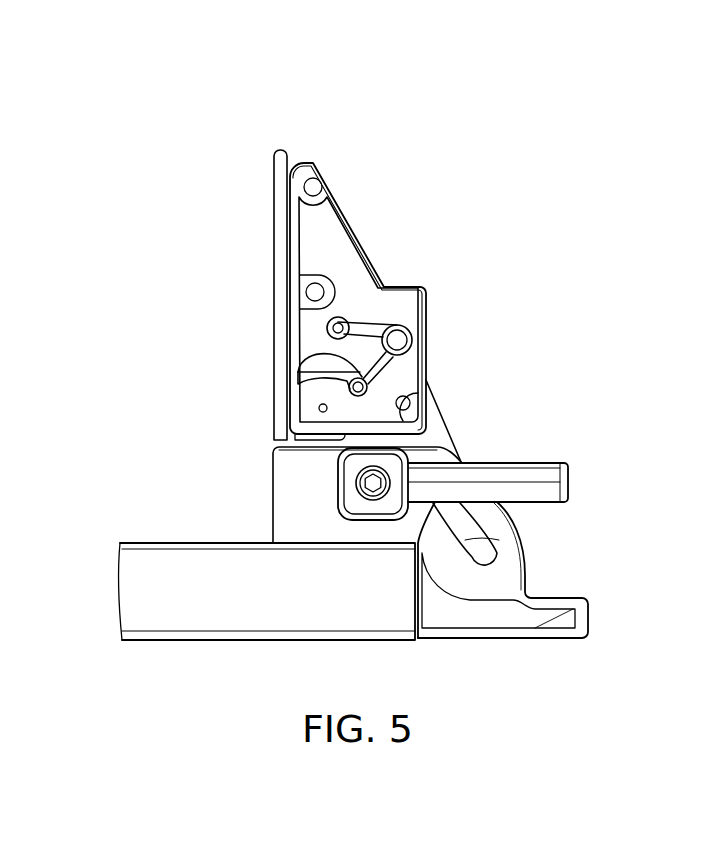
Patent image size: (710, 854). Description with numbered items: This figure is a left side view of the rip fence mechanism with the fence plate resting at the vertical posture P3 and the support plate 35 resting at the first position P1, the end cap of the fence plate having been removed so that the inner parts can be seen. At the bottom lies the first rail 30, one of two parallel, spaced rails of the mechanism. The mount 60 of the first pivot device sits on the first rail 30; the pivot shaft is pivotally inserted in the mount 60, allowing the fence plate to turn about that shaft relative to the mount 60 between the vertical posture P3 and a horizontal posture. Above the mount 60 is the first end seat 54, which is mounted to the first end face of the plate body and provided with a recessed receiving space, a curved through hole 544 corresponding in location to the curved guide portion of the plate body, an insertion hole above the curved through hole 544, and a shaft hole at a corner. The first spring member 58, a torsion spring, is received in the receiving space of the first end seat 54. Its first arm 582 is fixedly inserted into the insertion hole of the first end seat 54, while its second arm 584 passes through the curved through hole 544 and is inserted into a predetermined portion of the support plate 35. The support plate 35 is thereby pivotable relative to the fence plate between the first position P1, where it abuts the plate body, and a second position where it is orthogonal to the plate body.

The first rail 30 is at (187, 620).
The support plate 35 is at (280, 206).
The first end seat 54 is at (348, 222).
The curved through hole 544 is at (305, 352).
The first spring member 58 is at (408, 335).
The first arm 582 is at (340, 320).
The second arm 584 is at (365, 386).
The mount 60 is at (548, 553).
The first position P1 is at (253, 259).
The vertical posture P3 is at (398, 239).